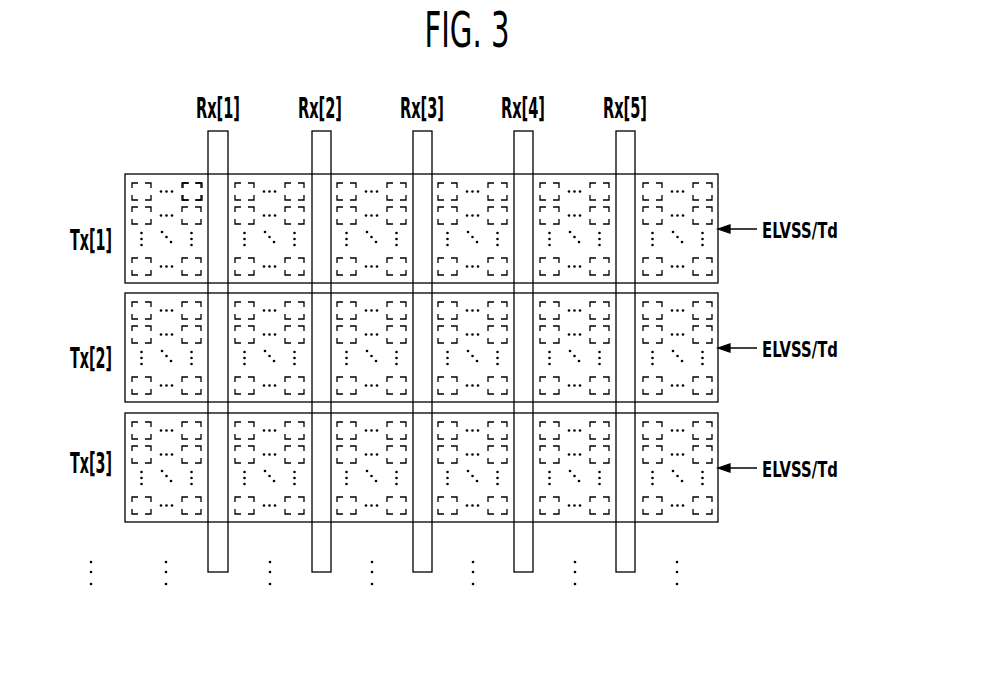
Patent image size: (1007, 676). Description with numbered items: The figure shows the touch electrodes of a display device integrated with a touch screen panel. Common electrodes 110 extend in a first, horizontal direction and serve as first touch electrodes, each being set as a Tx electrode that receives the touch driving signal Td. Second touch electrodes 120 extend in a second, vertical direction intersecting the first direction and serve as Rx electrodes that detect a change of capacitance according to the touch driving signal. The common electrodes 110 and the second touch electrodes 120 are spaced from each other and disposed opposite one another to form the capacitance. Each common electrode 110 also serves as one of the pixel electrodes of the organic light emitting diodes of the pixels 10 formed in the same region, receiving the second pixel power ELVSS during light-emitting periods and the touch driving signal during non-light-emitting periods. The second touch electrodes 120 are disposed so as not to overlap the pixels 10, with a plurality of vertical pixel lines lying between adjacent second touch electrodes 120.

The pixel 10 is at (188, 182).
The common electrode 110 is at (718, 190).
The second touch electrode 120 is at (622, 572).